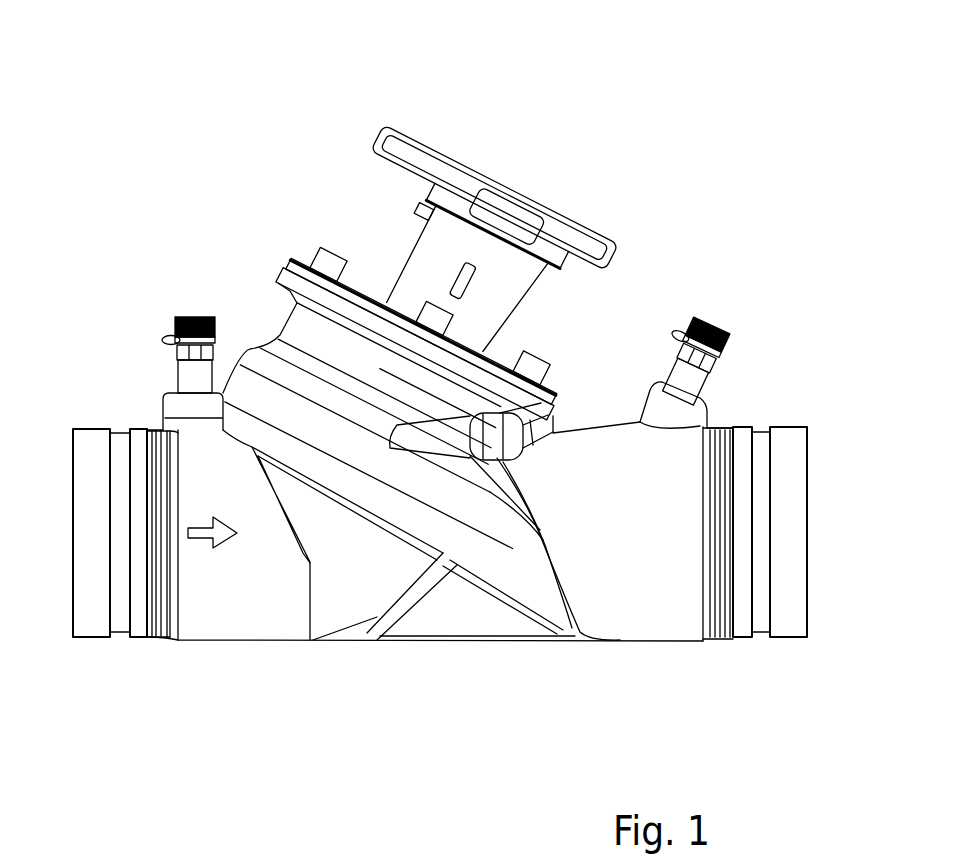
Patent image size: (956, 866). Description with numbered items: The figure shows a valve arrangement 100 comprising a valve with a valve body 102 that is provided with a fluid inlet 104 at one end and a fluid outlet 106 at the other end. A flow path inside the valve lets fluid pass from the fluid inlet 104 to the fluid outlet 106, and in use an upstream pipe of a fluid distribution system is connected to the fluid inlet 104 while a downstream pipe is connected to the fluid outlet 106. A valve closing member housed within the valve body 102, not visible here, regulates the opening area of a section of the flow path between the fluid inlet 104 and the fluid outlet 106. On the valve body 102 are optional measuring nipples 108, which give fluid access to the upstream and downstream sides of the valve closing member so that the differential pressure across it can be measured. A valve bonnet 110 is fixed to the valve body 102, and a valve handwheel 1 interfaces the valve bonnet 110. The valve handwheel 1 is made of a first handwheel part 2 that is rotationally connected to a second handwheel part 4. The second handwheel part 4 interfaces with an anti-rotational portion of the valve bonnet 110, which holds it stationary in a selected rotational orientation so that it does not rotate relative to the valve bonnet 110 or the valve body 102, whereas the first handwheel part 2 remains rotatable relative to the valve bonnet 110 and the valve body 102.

The valve arrangement 100 is at (196, 48).
The valve handwheel 1 is at (558, 186).
The first handwheel part 2 is at (612, 239).
The second handwheel part 4 is at (498, 302).
The valve body 102 is at (258, 645).
The fluid inlet 104 is at (72, 605).
The fluid outlet 106 is at (808, 588).
The measuring nipples 108 is at (177, 362).
The valve bonnet 110 is at (370, 287).